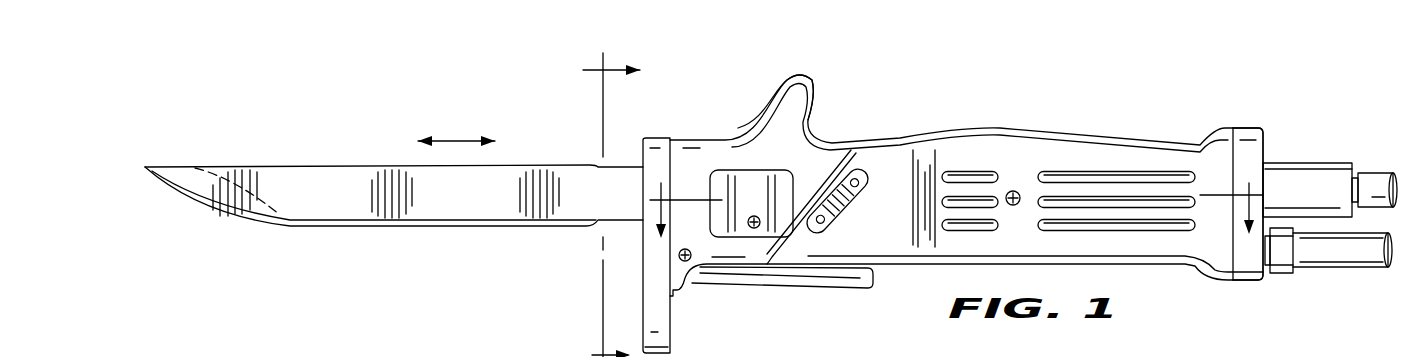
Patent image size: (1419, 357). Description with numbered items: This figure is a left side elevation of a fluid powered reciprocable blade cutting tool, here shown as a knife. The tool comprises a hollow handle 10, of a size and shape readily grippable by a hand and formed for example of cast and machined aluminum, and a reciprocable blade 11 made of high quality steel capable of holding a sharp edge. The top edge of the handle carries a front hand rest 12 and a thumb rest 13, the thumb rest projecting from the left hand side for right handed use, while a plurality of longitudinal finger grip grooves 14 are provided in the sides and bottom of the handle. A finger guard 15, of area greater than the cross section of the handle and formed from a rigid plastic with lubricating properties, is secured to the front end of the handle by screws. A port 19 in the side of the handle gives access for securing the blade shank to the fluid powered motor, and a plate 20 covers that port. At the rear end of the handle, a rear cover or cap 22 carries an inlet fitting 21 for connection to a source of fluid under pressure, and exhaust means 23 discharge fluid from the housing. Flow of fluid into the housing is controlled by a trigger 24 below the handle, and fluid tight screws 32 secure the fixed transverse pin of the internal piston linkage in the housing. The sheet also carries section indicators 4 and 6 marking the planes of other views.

The hollow handle 10 is at (924, 126).
The reciprocable blade 11 is at (261, 160).
The front hand rest 12 is at (789, 75).
The thumb rest 13 is at (846, 205).
The longitudinal finger grip grooves 14 is at (1108, 170).
The finger guard 15 is at (656, 136).
The port 19 is at (727, 170).
The plate 20 is at (781, 192).
The inlet fitting 21 is at (1287, 275).
The rear cover or cap 22 is at (1250, 126).
The exhaust means 23 is at (1326, 163).
The trigger 24 is at (838, 286).
The fluid tight screws 32 is at (1014, 190).
The section line 4 is at (590, 205).
The section line 6 is at (959, 210).